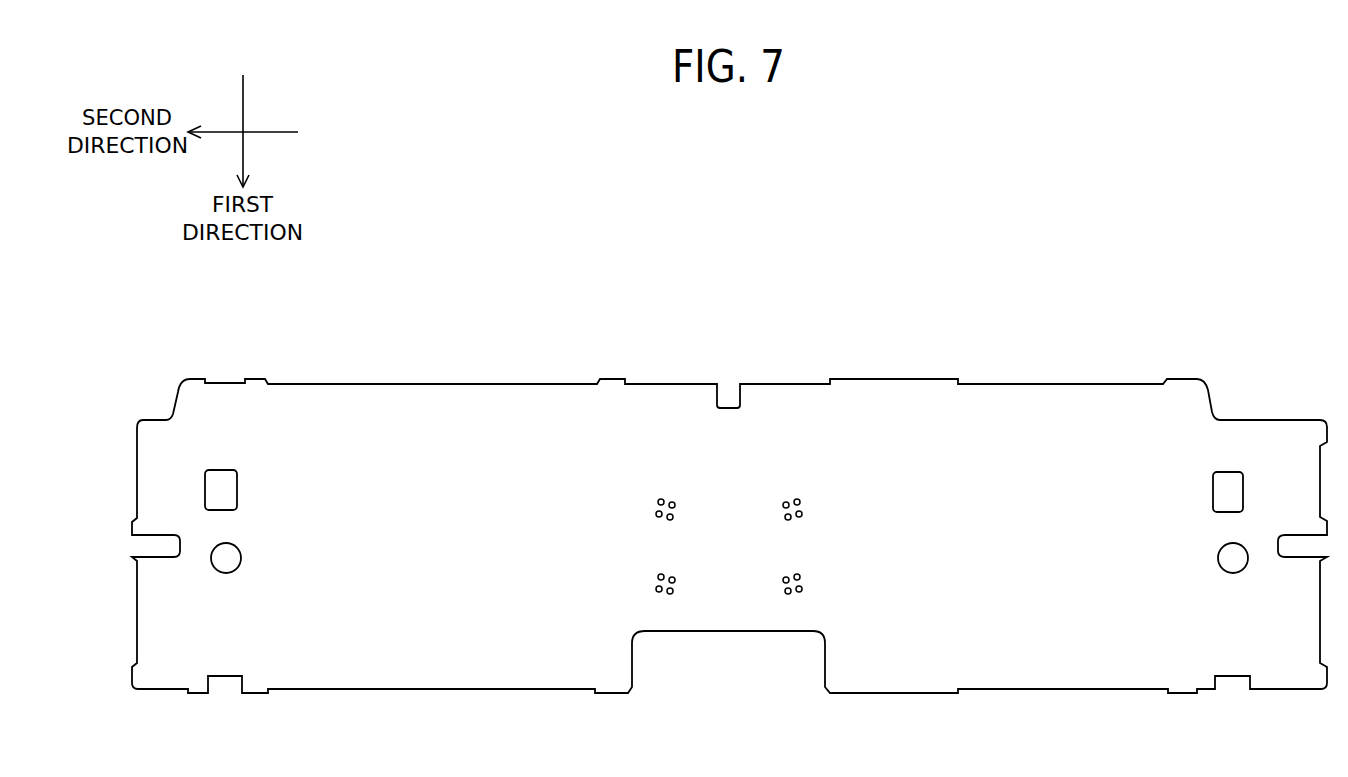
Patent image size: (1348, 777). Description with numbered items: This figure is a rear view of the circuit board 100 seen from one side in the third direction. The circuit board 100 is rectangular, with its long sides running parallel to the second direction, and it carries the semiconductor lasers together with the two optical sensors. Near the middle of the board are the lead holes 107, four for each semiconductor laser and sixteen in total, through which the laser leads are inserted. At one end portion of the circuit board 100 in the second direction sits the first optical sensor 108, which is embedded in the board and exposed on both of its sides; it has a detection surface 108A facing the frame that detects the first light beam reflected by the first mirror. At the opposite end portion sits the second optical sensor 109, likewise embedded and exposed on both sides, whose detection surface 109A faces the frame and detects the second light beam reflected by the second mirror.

The circuit board 100 is at (1094, 289).
The lead holes 107 is at (801, 502).
The first optical sensor 108 is at (221, 468).
The detection surface 108A is at (230, 483).
The second optical sensor 109 is at (1228, 470).
The detection surface 109A is at (1235, 487).